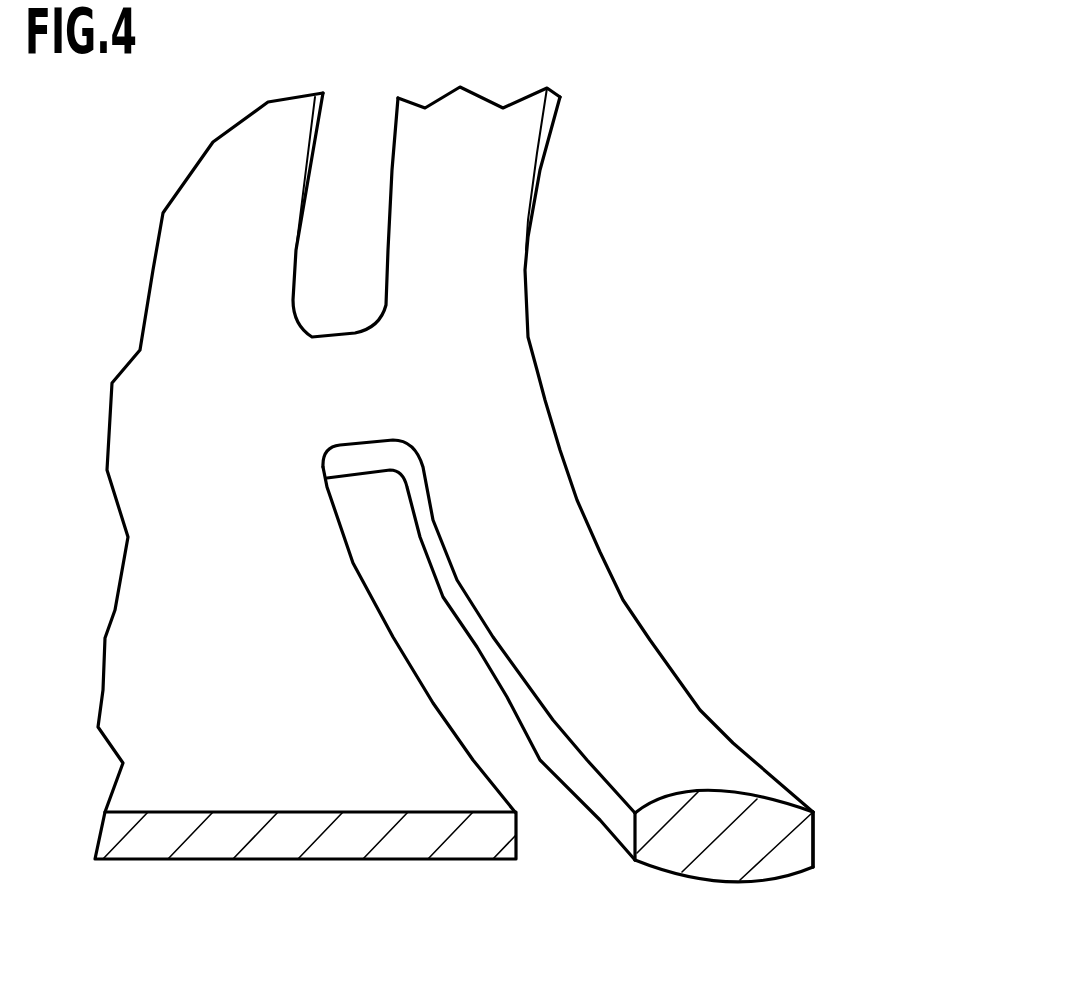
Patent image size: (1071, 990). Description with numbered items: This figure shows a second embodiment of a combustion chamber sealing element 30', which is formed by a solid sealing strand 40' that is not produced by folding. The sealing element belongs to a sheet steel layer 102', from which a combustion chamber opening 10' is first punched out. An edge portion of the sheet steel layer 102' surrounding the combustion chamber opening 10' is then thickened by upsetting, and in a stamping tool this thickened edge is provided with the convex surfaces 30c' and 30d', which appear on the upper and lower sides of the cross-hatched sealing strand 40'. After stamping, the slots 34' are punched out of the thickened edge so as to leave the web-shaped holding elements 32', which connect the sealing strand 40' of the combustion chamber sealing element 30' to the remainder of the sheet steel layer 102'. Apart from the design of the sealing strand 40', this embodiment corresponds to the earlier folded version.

The sheet steel layer 102' is at (310, 473).
The web-shaped holding element 32' is at (345, 249).
The combustion chamber sealing element 30' is at (669, 477).
The slot 34' is at (474, 650).
The convex surface 30c' is at (724, 743).
The convex surface 30d' is at (751, 912).
The solid sealing strand 40' is at (724, 867).
The combustion chamber opening 10' is at (875, 839).